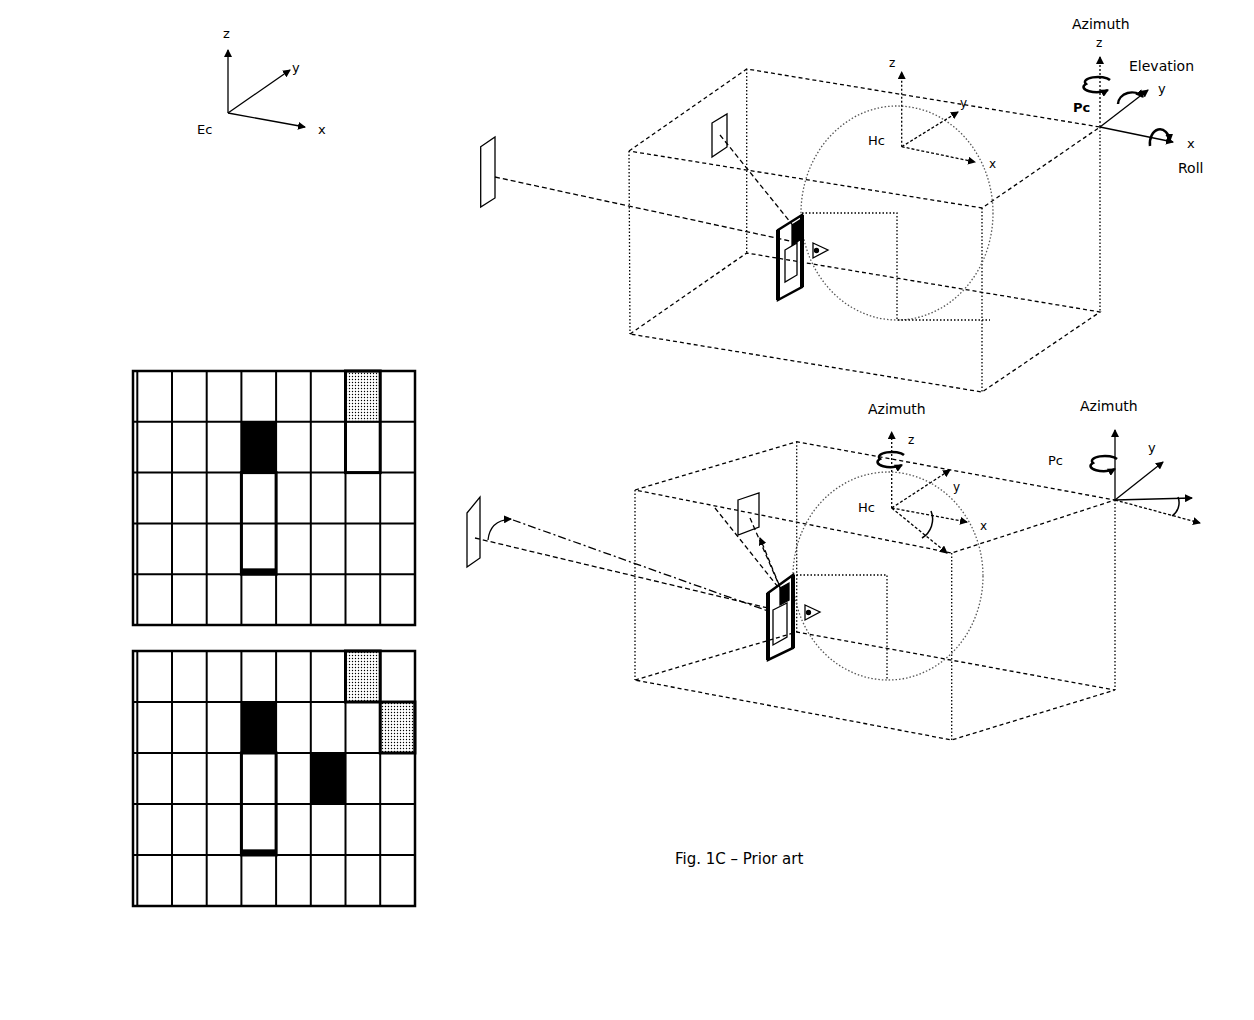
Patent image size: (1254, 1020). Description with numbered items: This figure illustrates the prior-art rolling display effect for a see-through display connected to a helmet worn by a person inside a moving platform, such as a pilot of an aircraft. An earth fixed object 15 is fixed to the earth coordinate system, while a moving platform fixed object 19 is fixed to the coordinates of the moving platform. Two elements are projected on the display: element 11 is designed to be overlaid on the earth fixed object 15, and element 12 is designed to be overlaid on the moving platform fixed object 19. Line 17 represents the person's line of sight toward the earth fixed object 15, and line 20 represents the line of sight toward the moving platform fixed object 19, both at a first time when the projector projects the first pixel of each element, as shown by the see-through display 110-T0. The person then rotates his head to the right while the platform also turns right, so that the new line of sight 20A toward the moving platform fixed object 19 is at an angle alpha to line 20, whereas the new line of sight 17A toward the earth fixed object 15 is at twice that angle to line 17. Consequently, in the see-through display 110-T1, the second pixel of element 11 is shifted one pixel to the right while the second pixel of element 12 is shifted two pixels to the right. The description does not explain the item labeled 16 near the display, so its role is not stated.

The element 11 is at (240, 485).
The element 12 is at (345, 435).
The earth fixed object 15 is at (480, 188).
The user eye 16 is at (778, 300).
The line of sight 17 is at (543, 190).
The new line of sight 17A is at (583, 548).
The moving platform fixed object 19 is at (718, 118).
The line of sight 20 is at (748, 165).
The new line of sight 20A is at (773, 525).
The see-through display at T0 110-T0 is at (437, 618).
The see-through display at T1 110-T1 is at (415, 878).